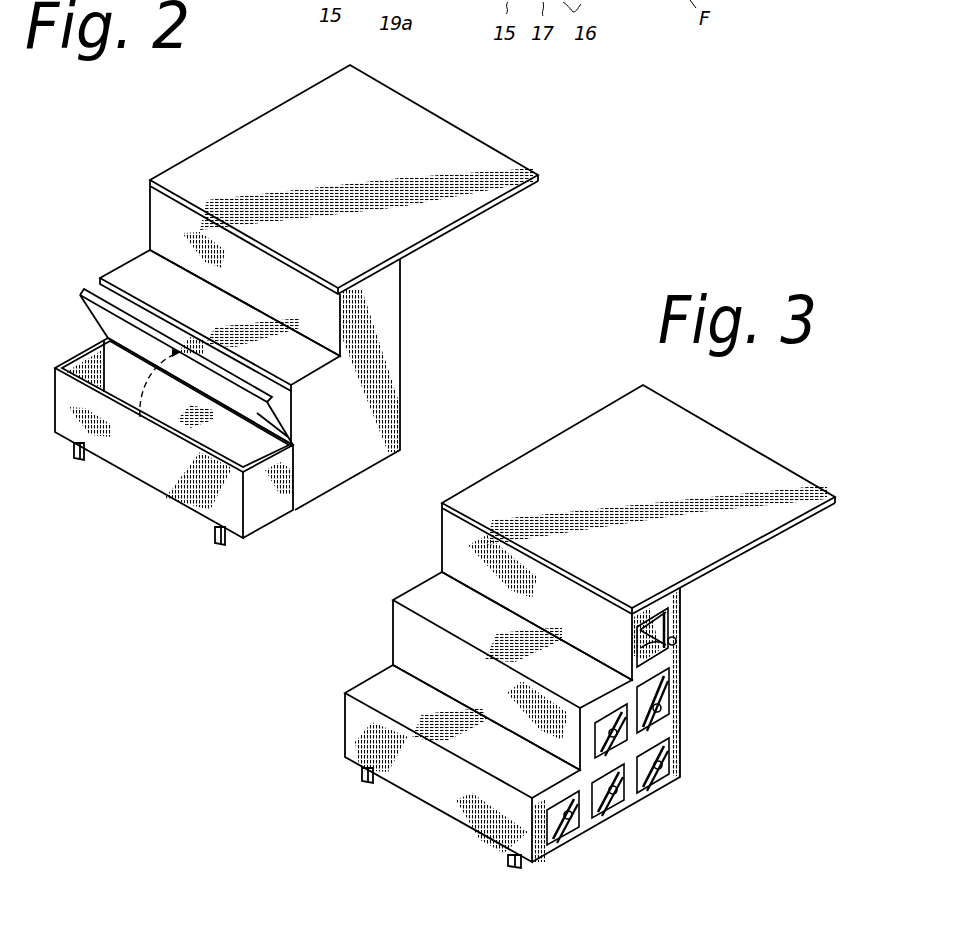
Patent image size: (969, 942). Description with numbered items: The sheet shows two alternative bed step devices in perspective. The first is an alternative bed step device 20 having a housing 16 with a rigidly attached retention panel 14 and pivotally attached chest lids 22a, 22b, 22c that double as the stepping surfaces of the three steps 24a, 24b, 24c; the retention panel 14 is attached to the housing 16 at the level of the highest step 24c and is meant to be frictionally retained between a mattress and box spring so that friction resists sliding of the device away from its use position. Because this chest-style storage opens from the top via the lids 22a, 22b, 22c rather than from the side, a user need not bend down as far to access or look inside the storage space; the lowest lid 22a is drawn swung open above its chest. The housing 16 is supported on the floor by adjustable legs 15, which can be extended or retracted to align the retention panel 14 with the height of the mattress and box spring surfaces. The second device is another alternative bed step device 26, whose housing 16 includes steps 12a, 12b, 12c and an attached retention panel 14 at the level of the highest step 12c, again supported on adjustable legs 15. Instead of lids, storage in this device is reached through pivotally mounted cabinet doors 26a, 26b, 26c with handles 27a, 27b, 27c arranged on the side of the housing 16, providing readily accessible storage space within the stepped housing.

In FIG. 2, the retention panel 14 is at (394, 163).
In FIG. 3, the retention panel 14 is at (644, 494).
In FIG. 2, the chest lid 22c is at (225, 192).
In FIG. 2, the step 24c is at (181, 162).
In FIG. 2, the bed step device 20 is at (70, 202).
In FIG. 2, the chest lid 22b is at (212, 317).
In FIG. 2, the step 24b is at (131, 259).
In FIG. 2, the housing 16 is at (350, 428).
In FIG. 3, the housing 16 is at (640, 677).
In FIG. 2, the step 24a is at (75, 356).
In FIG. 2, the chest lid 22a is at (295, 456).
In FIG. 2, the adjustable leg 15 is at (76, 459).
In FIG. 3, the adjustable leg 15 is at (365, 783).
In FIG. 3, the bed step device 26 is at (330, 621).
In FIG. 3, the step 12c is at (617, 582).
In FIG. 3, the step 12b is at (489, 632).
In FIG. 3, the step 12a is at (412, 711).
In FIG. 3, the cabinet door 26c is at (654, 625).
In FIG. 3, the handle 27c is at (679, 642).
In FIG. 3, the cabinet door 26b is at (630, 738).
In FIG. 3, the handle 27b is at (654, 706).
In FIG. 3, the cabinet door 26a is at (583, 836).
In FIG. 3, the handle 27a is at (611, 789).